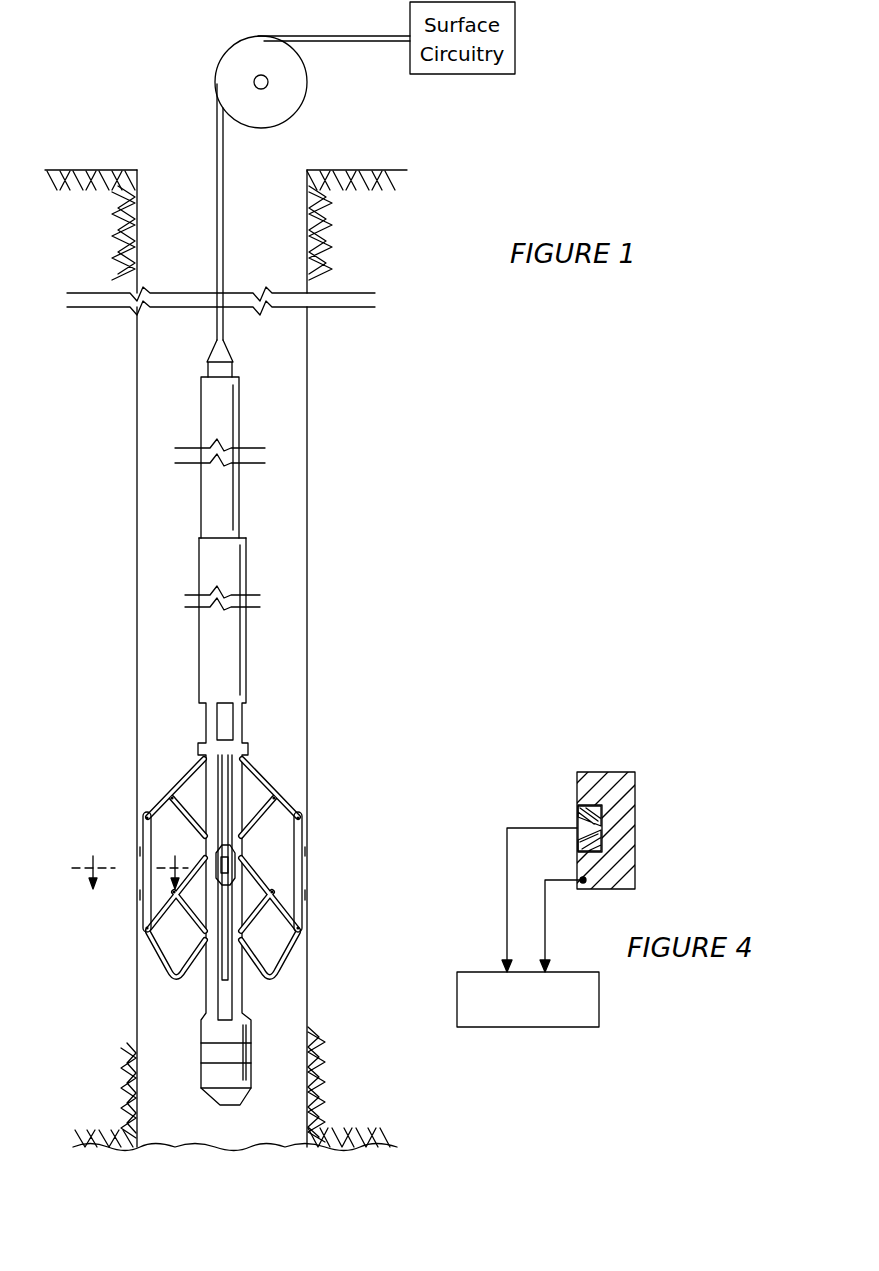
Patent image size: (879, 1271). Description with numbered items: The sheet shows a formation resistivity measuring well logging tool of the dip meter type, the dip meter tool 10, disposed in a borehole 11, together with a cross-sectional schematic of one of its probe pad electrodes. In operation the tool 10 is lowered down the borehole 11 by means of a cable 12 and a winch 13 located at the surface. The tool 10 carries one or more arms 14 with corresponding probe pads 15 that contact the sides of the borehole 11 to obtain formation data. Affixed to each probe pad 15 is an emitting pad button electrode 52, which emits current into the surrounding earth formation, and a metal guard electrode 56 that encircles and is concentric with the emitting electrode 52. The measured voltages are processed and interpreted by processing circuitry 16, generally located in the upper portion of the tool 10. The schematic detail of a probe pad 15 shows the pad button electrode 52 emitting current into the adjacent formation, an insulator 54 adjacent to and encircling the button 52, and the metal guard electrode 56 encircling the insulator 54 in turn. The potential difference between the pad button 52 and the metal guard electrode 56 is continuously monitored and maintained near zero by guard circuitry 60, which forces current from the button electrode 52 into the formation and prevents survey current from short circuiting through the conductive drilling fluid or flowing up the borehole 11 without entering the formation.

In FIG. 1, the dip meter tool 10 is at (176, 744).
In FIG. 1, the borehole 11 is at (306, 427).
In FIG. 1, the cable 12 is at (215, 145).
In FIG. 1, the winch 13 is at (293, 90).
In FIG. 1, the arms 14 is at (180, 778).
In FIG. 1, the probe pad 15 is at (307, 880).
In FIG. 4, the probe pad 15 is at (626, 764).
In FIG. 1, the processing circuitry 16 is at (228, 648).
In FIG. 1, the emitting pad button electrode 52 is at (229, 865).
In FIG. 4, the emitting pad button electrode 52 is at (576, 824).
In FIG. 4, the insulator 54 is at (577, 848).
In FIG. 1, the metal guard electrode 56 is at (233, 855).
In FIG. 4, the metal guard electrode 56 is at (626, 813).
In FIG. 4, the guard circuitry 60 is at (528, 999).